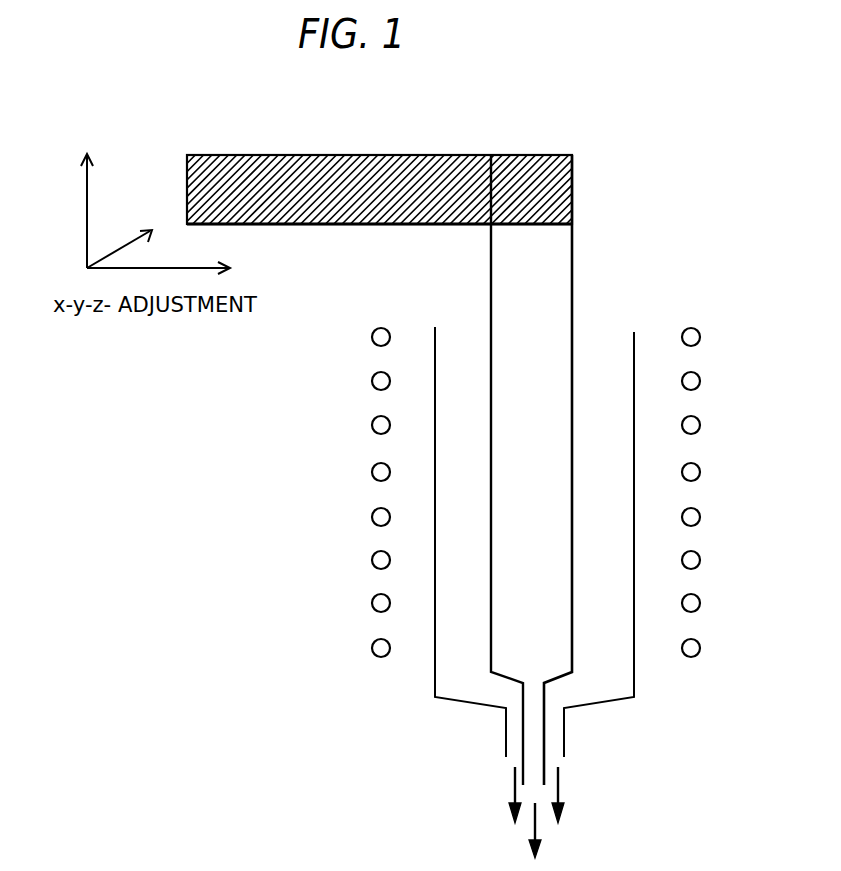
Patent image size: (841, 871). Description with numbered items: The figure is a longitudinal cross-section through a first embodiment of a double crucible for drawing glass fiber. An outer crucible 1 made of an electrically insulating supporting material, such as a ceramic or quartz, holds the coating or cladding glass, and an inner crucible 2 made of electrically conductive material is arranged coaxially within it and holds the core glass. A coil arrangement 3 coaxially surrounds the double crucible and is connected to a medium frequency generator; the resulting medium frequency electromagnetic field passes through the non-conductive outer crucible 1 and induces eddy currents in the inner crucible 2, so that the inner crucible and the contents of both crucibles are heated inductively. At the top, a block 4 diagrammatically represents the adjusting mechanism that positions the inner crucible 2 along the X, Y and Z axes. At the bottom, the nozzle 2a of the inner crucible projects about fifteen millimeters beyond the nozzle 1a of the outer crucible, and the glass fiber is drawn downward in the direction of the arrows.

The outer crucible 1 is at (634, 333).
The nozzle of the outer crucible 1a is at (563, 738).
The inner crucible 2 is at (491, 346).
The nozzle of the inner crucible 2a is at (520, 737).
The coil arrangement 3 is at (698, 432).
The block 4 is at (357, 172).